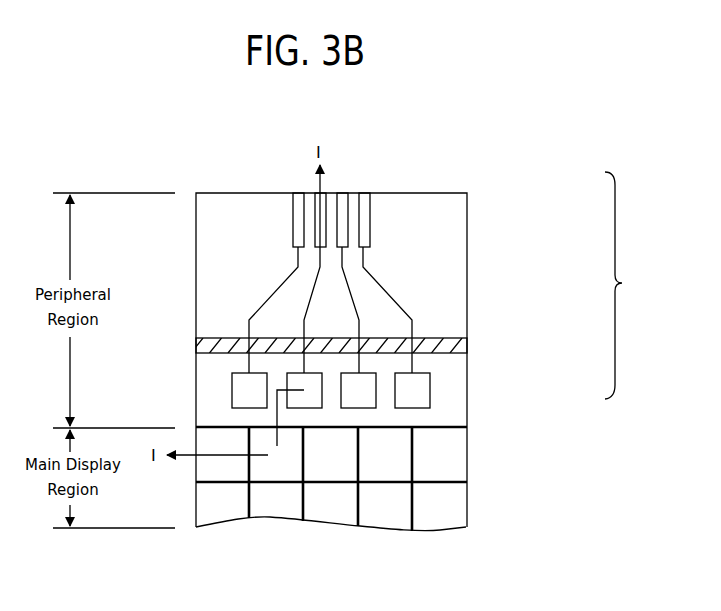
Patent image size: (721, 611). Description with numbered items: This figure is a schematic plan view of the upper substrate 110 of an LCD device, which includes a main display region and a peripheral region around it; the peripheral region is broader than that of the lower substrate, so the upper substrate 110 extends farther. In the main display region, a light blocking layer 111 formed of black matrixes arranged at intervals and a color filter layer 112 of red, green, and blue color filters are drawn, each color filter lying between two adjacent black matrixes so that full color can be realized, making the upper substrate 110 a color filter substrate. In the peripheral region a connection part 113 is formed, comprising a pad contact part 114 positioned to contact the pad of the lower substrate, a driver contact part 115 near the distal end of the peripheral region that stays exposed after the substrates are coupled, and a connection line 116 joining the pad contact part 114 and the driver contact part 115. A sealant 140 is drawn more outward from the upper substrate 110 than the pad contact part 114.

The upper substrate 110 is at (467, 238).
The light blocking layer 111 is at (435, 482).
The color filter layer 112 is at (453, 457).
The connection part 113 is at (630, 285).
The pad contact part 114 is at (430, 390).
The driver contact part 115 is at (372, 219).
The connection line 116 is at (387, 294).
The sealant 140 is at (467, 343).